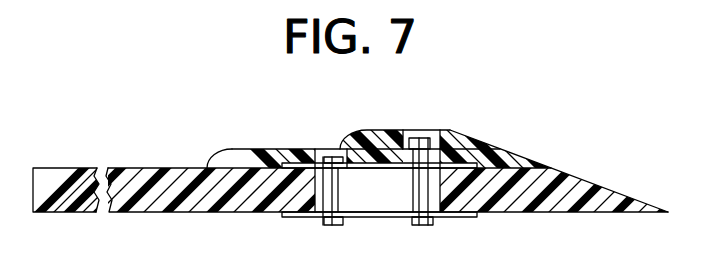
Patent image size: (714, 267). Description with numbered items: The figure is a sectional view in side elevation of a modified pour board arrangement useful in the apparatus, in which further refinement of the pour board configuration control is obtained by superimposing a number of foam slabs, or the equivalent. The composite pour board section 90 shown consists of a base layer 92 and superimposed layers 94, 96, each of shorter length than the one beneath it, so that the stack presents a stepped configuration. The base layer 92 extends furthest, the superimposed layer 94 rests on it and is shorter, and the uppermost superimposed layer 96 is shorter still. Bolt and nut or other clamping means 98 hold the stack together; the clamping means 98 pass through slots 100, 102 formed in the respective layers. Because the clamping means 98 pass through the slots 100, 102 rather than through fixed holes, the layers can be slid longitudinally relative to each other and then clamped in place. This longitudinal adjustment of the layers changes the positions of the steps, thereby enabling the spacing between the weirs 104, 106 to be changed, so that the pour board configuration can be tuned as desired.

The composite pour board section 90 is at (108, 163).
The base layer 92 is at (215, 205).
The superimposed layer 94 is at (265, 155).
The superimposed layer 96 is at (438, 131).
The clamping means 98 is at (332, 225).
The slot 100 is at (360, 208).
The slot 102 is at (410, 160).
The weir 104 is at (221, 163).
The weir 106 is at (350, 145).